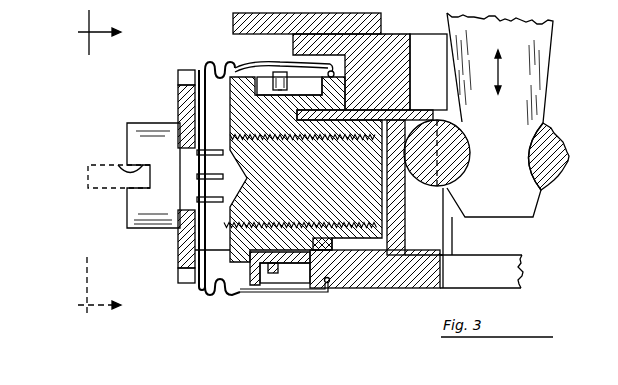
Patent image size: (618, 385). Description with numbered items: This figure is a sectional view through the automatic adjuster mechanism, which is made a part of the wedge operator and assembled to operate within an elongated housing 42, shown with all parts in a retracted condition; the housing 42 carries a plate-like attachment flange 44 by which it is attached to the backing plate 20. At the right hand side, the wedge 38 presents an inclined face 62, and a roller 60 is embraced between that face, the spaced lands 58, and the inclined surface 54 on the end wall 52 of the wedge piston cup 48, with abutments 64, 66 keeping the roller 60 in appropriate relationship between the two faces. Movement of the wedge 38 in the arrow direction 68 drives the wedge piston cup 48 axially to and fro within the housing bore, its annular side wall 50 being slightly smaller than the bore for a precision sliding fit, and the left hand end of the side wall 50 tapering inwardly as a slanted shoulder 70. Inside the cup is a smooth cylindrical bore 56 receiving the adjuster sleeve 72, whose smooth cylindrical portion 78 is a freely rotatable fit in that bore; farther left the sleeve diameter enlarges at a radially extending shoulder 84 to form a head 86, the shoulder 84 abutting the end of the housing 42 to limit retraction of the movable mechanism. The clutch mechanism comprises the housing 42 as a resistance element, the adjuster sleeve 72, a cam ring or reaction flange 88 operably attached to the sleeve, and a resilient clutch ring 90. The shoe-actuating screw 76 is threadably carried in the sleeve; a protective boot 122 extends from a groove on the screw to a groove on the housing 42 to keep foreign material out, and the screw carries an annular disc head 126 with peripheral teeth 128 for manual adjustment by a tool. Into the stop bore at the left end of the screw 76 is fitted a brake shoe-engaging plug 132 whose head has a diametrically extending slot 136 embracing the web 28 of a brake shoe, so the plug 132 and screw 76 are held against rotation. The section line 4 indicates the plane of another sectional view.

The section line 4- 4 is at (105, 162).
The backing plate 20 is at (233, 17).
The web 28 is at (88, 165).
The wedge 38 is at (550, 58).
The housing 42 is at (347, 288).
The attachment flange 44 is at (297, 57).
The wedge piston cup 48 is at (432, 80).
The annular side wall 50 is at (328, 287).
The end wall 52 is at (412, 288).
The inclined surface 54 is at (411, 190).
The cylindrical bore 56 is at (326, 250).
The spaced lands 58 is at (447, 290).
The roller 60 is at (462, 120).
The inclined face 62 is at (447, 30).
The abutment 64 is at (440, 112).
The abutment 66 is at (455, 203).
The arrow direction 68 is at (517, 36).
The slanted shoulder 70 is at (262, 66).
The adjuster sleeve 72 is at (178, 116).
The shoe-actuating screw 76 is at (172, 90).
The smooth cylindrical portion 78 is at (293, 292).
The radially extending shoulder 84 is at (209, 290).
The head 86 is at (180, 252).
The cam ring or reaction flange 88 is at (240, 295).
The clutch ring 90 is at (280, 292).
The protective boot 122 is at (214, 64).
The annular disc head 126 is at (172, 262).
The teeth 128 is at (178, 77).
The brake shoe-engaging plug 132 is at (120, 131).
The slot 136 is at (133, 172).